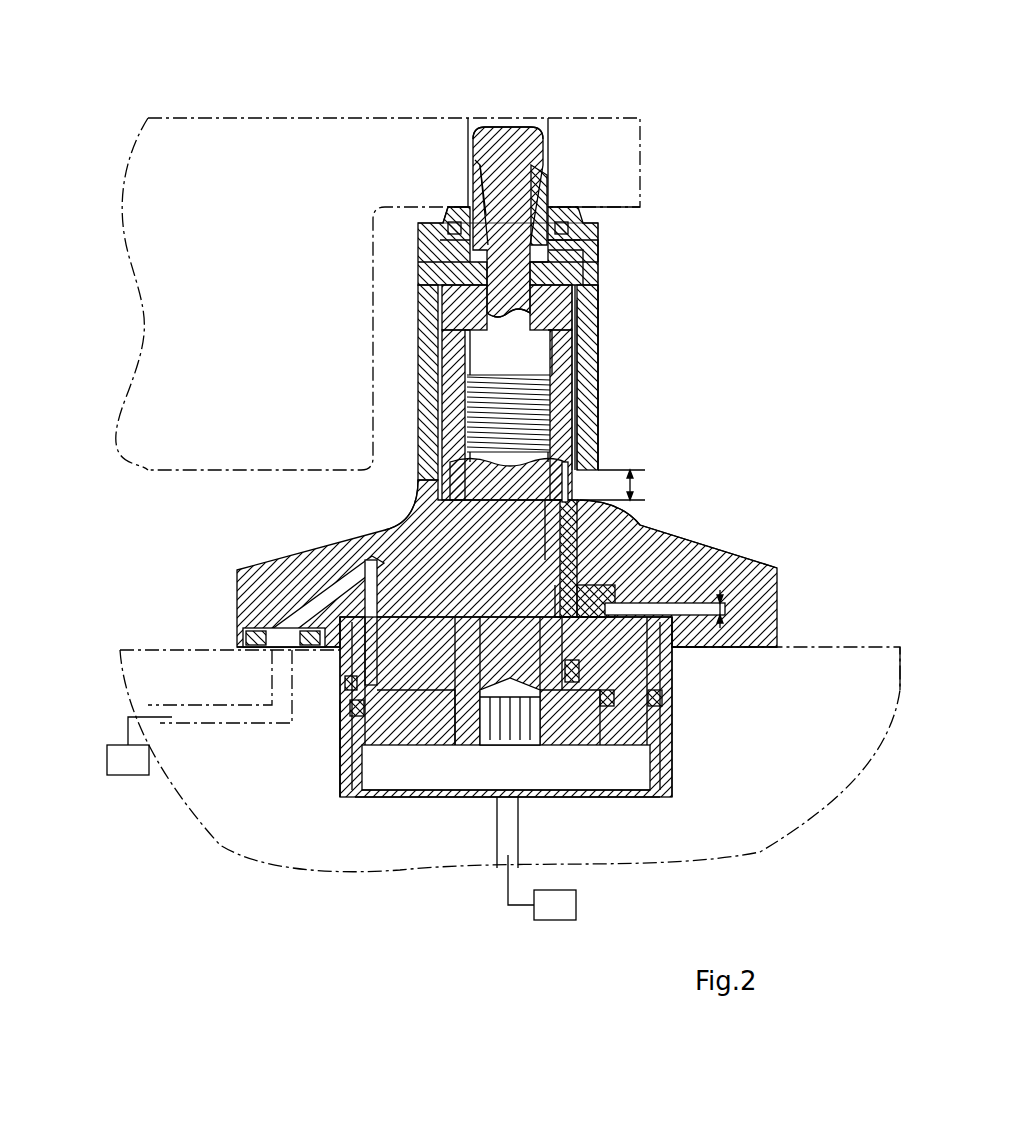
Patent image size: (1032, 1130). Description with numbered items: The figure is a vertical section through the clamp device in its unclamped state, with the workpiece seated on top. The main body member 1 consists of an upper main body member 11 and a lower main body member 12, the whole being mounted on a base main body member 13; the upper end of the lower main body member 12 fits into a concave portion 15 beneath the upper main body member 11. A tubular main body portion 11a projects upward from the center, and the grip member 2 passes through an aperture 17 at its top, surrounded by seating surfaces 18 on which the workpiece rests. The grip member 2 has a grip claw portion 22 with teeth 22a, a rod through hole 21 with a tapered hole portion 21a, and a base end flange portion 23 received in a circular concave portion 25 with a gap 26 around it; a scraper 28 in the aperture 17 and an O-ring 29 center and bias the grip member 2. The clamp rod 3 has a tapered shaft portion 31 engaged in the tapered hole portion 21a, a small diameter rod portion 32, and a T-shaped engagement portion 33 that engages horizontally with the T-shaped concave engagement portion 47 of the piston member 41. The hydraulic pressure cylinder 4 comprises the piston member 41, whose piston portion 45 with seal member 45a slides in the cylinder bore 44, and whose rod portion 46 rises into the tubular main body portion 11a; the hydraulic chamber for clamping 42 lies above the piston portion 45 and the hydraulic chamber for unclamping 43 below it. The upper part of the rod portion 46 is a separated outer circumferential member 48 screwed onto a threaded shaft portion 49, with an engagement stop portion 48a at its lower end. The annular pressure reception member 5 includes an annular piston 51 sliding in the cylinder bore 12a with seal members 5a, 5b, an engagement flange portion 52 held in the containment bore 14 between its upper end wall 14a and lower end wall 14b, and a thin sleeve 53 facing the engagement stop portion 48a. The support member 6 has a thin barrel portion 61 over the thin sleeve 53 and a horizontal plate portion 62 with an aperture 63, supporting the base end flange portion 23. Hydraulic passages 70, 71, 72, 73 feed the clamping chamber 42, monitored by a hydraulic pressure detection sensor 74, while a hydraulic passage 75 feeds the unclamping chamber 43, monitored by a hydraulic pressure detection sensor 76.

The main body member 1 is at (820, 688).
The grip member 2 is at (562, 152).
The clamp rod 3 is at (519, 125).
The hydraulic pressure cylinder 4 is at (395, 775).
The annular pressure reception member 5 is at (592, 585).
The seal member 5a is at (560, 600).
The seal member 5b is at (533, 711).
The support member 6 is at (583, 430).
The upper main body member 11 is at (730, 650).
The tubular main body portion 11a is at (602, 346).
The lower main body member 12 is at (650, 665).
The cylinder bore 12a is at (400, 825).
The base main body member 13 is at (728, 822).
The containment bore 14 is at (425, 532).
The upper end wall 14a is at (592, 580).
The lower end wall 14b is at (560, 680).
The concave portion 15 is at (648, 718).
The aperture 17 is at (430, 250).
The seating surfaces 18 is at (438, 195).
The rod through hole 21 is at (538, 188).
The tapered hole portion 21a is at (490, 135).
The grip claw portion 22 is at (549, 160).
The teeth 22a is at (470, 170).
The base end flange portion 23 is at (592, 232).
The circular concave portion 25 is at (592, 255).
The gap 26 is at (420, 235).
The scraper 28 is at (445, 210).
The O-ring 29 is at (440, 225).
The tapered shaft portion 31 is at (508, 130).
The small diameter rod portion 32 is at (440, 292).
The T-shaped engagement portion 33 is at (455, 335).
The piston member 41 is at (380, 790).
The hydraulic chamber for clamping 42 is at (598, 735).
The hydraulic chamber for unclamping 43 is at (520, 775).
The cylinder bore 44 is at (625, 790).
The piston portion 45 is at (440, 740).
The seal member 45a is at (372, 745).
The rod portion 46 is at (422, 515).
The T-shaped concave engagement portion 47 is at (455, 375).
The separated outer circumferential member 48 is at (447, 425).
The engagement stop portion 48a is at (420, 500).
The threaded shaft portion 49 is at (448, 400).
The annular piston 51 is at (565, 645).
The engagement flange portion 52 is at (615, 598).
The thin sleeve 53 is at (545, 555).
The thin barrel portion 61 is at (578, 400).
The horizontal plate portion 62 is at (590, 272).
The aperture 63 is at (582, 292).
The hydraulic passage 70 is at (345, 690).
The hydraulic passage 71 is at (300, 560).
The hydraulic passage 72 is at (290, 585).
The hydraulic passage 73 is at (212, 705).
The hydraulic pressure detection sensor 74 is at (120, 778).
The hydraulic passage 75 is at (525, 838).
The hydraulic pressure detection sensor 76 is at (578, 905).